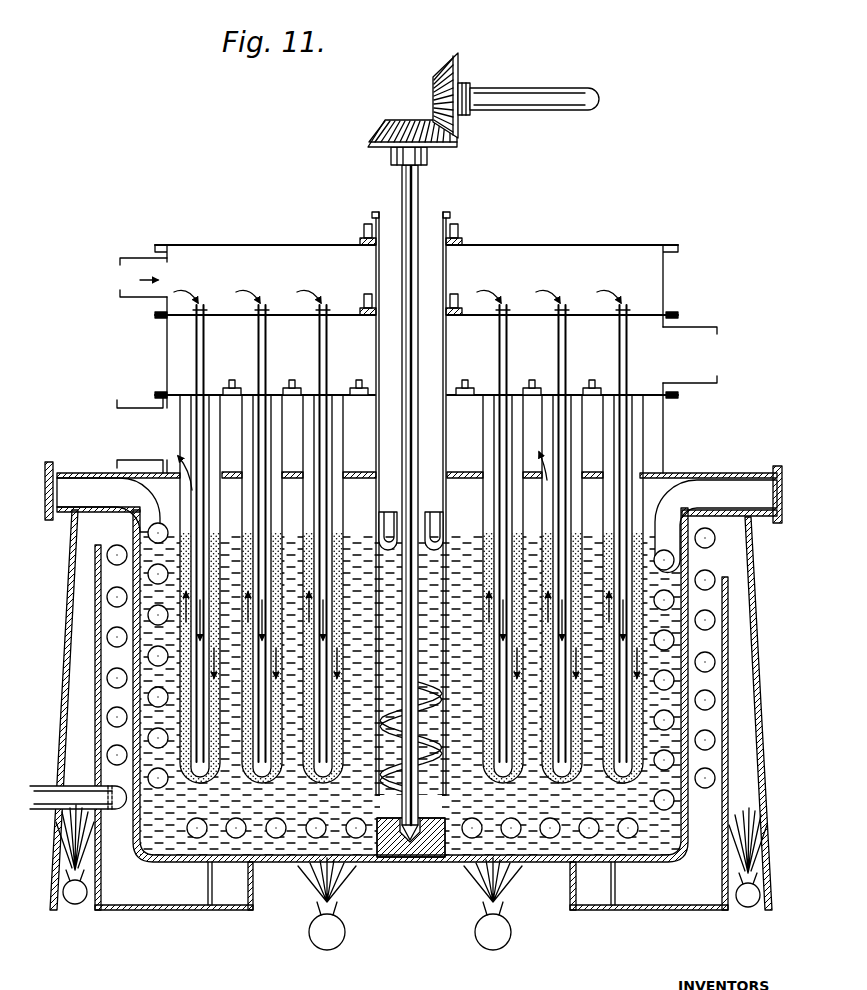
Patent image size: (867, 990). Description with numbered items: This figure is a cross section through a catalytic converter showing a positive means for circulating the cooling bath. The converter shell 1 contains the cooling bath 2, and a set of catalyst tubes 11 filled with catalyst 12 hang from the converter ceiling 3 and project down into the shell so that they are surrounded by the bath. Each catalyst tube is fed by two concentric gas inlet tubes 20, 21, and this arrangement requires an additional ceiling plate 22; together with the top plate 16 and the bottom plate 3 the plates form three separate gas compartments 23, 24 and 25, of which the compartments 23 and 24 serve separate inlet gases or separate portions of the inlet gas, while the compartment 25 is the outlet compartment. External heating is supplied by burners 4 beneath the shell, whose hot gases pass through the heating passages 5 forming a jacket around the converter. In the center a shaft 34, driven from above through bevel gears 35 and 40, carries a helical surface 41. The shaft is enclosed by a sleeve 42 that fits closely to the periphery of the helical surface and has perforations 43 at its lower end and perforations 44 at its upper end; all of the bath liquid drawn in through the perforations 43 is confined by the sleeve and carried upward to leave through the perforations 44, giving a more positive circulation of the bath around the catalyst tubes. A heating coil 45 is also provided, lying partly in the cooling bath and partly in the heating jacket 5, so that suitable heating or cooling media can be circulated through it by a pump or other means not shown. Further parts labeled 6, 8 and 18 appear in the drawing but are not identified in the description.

The converter shell 1 is at (133, 832).
The cooling bath 2 is at (153, 555).
The converter ceiling 3 is at (531, 453).
The burners 4 is at (77, 904).
The heating passages 5 is at (765, 712).
The nozzles 6 is at (470, 389).
The side duct 8 is at (147, 442).
The catalyst tubes 11 is at (238, 510).
The catalyst 12 is at (284, 540).
The top plate 16 is at (240, 246).
The inlet 18 is at (124, 277).
The gas inlet tube 20 is at (190, 427).
The gas inlet tube 21 is at (195, 346).
The ceiling plate 22 is at (226, 313).
The gas compartment 23 is at (345, 273).
The gas compartment 24 is at (248, 385).
The outlet compartment 25 is at (292, 430).
The shaft 34 is at (420, 192).
The bevel gear 35 is at (376, 126).
The bevel gear 40 is at (440, 66).
The helical surface 41 is at (417, 862).
The sleeve 42 is at (448, 358).
The perforations 43 is at (379, 862).
The perforations 44 is at (380, 523).
The heating coil 45 is at (100, 479).